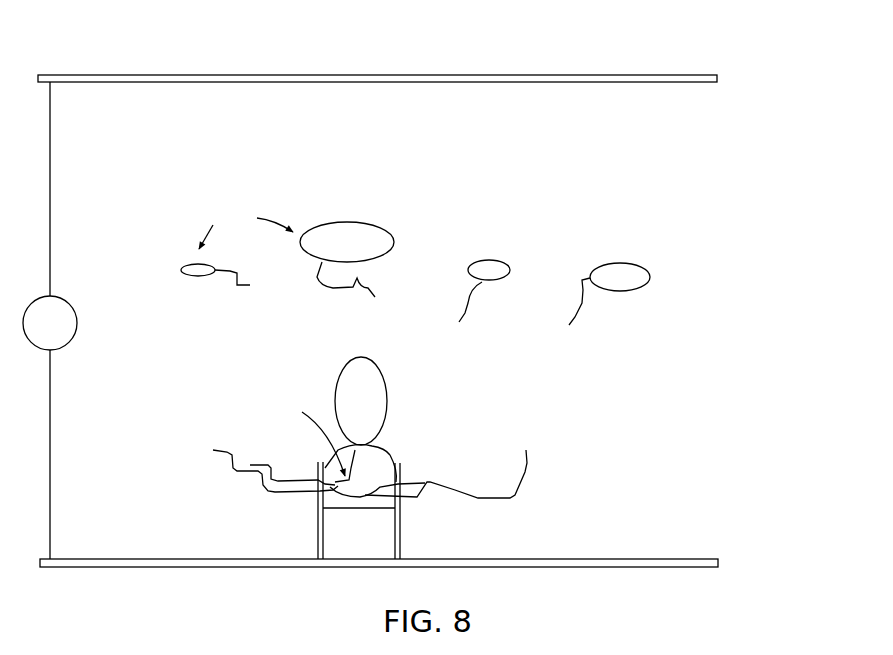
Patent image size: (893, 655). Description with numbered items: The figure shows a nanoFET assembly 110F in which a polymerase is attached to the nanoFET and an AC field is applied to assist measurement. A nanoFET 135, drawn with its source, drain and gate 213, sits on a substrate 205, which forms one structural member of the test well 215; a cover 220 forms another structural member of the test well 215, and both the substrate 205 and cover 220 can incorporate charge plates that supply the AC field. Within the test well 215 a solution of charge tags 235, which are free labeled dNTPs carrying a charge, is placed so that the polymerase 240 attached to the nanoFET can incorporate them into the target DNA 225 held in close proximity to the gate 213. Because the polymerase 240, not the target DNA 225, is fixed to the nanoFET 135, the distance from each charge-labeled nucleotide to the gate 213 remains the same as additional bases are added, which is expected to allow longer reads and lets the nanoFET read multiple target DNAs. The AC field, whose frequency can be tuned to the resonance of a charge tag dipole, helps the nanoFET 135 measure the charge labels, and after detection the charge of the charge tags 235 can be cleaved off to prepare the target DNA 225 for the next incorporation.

The nanoFET assembly 110F is at (125, 63).
The cover 220 is at (718, 77).
The substrate 205 is at (718, 561).
The test well 215 is at (675, 387).
The charge tags 235 is at (197, 277).
The nanoFET 135 is at (360, 536).
The gate 213 is at (353, 548).
The polymerase 240 is at (390, 455).
The target DNA 225 is at (528, 462).